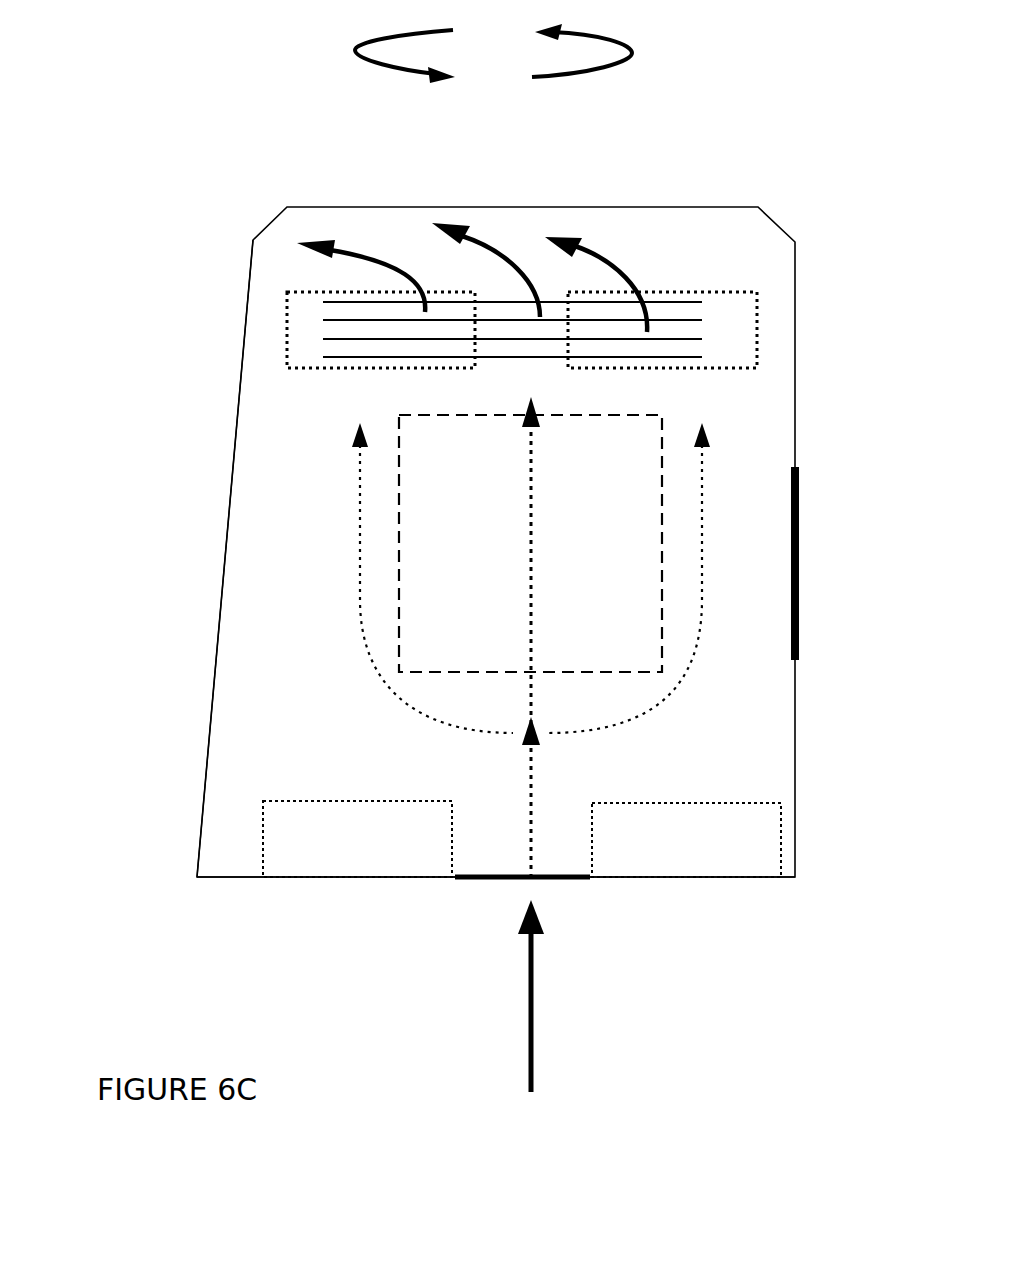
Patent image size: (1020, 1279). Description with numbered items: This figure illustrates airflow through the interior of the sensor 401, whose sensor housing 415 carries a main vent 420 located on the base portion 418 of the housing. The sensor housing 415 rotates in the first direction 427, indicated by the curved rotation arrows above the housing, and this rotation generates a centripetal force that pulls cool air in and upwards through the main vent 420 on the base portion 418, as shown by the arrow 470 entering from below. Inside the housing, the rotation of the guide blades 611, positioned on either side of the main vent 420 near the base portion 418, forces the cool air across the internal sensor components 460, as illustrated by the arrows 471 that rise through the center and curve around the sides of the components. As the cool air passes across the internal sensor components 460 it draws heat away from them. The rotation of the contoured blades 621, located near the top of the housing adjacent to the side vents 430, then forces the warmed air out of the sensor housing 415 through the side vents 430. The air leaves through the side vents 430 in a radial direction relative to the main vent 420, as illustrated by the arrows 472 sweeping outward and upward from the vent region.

The sensor 401 is at (205, 228).
The sensor housing 415 is at (240, 393).
The base portion 418 is at (218, 878).
The main vent 420 is at (456, 879).
The first direction 427 is at (632, 53).
The side vents 430 is at (337, 338).
The internal sensor components 460 is at (441, 560).
The arrow 470 is at (528, 980).
The arrows 471 is at (358, 517).
The arrows 472 is at (545, 238).
The guide blades 611 is at (283, 832).
The contoured blades 621 is at (287, 310).